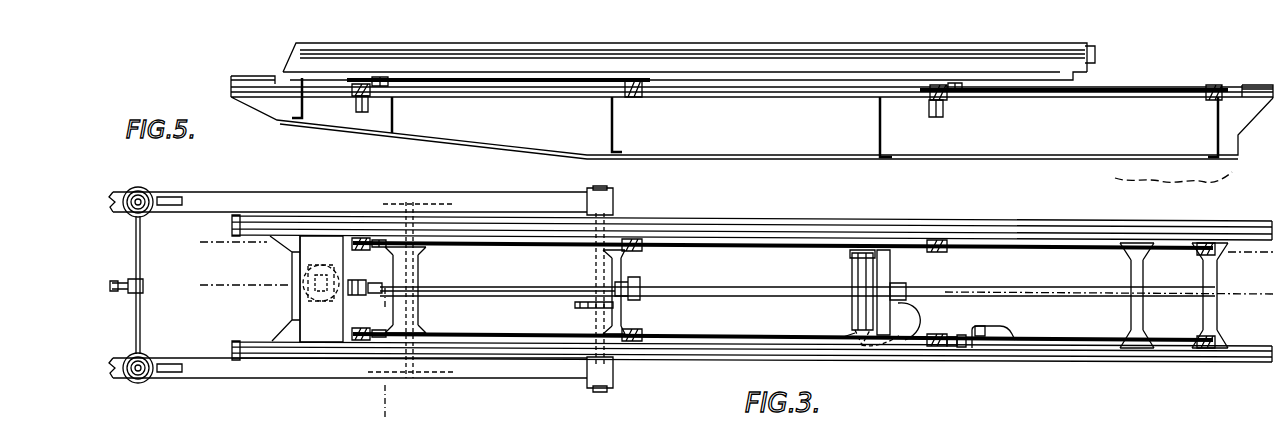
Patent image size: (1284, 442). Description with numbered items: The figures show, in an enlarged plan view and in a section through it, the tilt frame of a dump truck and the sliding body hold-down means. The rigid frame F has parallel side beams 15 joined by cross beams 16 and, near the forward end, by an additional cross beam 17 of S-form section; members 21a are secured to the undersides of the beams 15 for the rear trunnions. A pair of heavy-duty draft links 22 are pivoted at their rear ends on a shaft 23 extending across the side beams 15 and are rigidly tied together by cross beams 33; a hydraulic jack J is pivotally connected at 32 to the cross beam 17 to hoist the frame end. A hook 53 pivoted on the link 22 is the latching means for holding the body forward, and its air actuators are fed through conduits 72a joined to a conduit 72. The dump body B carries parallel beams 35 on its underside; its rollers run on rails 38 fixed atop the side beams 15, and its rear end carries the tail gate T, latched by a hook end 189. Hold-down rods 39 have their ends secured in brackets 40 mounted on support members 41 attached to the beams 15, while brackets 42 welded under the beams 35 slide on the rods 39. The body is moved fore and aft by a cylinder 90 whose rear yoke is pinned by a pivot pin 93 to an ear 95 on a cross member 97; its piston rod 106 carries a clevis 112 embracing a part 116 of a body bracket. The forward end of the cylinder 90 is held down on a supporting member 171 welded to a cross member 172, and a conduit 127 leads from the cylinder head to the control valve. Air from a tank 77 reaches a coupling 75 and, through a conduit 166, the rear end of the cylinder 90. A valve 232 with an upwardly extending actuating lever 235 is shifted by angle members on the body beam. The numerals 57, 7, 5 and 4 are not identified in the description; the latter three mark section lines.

In FIG. 5, the dump body B is at (295, 50).
In FIG. 5, the tail gate T is at (1098, 49).
In FIG. 5, the hook end 189 is at (1097, 60).
In FIG. 5, the parallel beams 35 is at (797, 68).
In FIG. 5, the rails 38 is at (243, 76).
In FIG. 3, the rails 38 is at (733, 222).
In FIG. 5, the side beams 15 is at (848, 150).
In FIG. 3, the side beams 15 is at (785, 223).
In FIG. 5, the frame F is at (722, 157).
In FIG. 5, the additional cross beam 17 is at (300, 104).
In FIG. 3, the additional cross beam 17 is at (290, 313).
In FIG. 5, the cross beams 16 is at (395, 118).
In FIG. 3, the cross beams 16 is at (408, 300).
In FIG. 5, the cross member 172 is at (611, 133).
In FIG. 3, the cross member 172 is at (628, 258).
In FIG. 5, the cross member 97 is at (878, 127).
In FIG. 3, the cross member 97 is at (893, 270).
In FIG. 5, the members 21a is at (1110, 172).
In FIG. 5, the rods 39 is at (555, 88).
In FIG. 3, the rods 39 is at (507, 248).
In FIG. 5, the brackets 40 is at (358, 97).
In FIG. 3, the brackets 40 is at (362, 238).
In FIG. 5, the support members 41 is at (367, 110).
In FIG. 3, the support members 41 is at (357, 251).
In FIG. 5, the brackets 42 is at (388, 80).
In FIG. 3, the brackets 42 is at (380, 240).
In FIG. 3, the links 22 is at (266, 200).
In FIG. 3, the wheel 57 is at (148, 188).
In FIG. 3, the hook 53 is at (165, 196).
In FIG. 3, the conduits 72a is at (138, 262).
In FIG. 3, the conduit 72 is at (116, 292).
In FIG. 3, the pivotal connection 32 is at (321, 302).
In FIG. 3, the hydraulic jack J is at (303, 270).
In FIG. 3, the cross beams 33 is at (408, 320).
In FIG. 3, the section line 7 is at (384, 297).
In FIG. 3, the section line 5 is at (208, 244).
In FIG. 3, the section line 4 is at (208, 287).
In FIG. 3, the cylinder 90 is at (705, 290).
In FIG. 3, the clevis 112 is at (383, 296).
In FIG. 3, the part 116 is at (372, 288).
In FIG. 3, the piston rod 106 is at (505, 293).
In FIG. 3, the shaft 23 is at (598, 268).
In FIG. 3, the supporting member 171 is at (640, 280).
In FIG. 3, the conduit 127 is at (590, 314).
In FIG. 3, the tank 77 is at (850, 272).
In FIG. 3, the pivot pin 93 is at (905, 290).
In FIG. 3, the ear 95 is at (940, 292).
In FIG. 3, the conduit 166 is at (916, 312).
In FIG. 3, the coupling 75 is at (838, 332).
In FIG. 3, the valve 232 is at (1000, 320).
In FIG. 3, the valve actuating lever 235 is at (1015, 342).